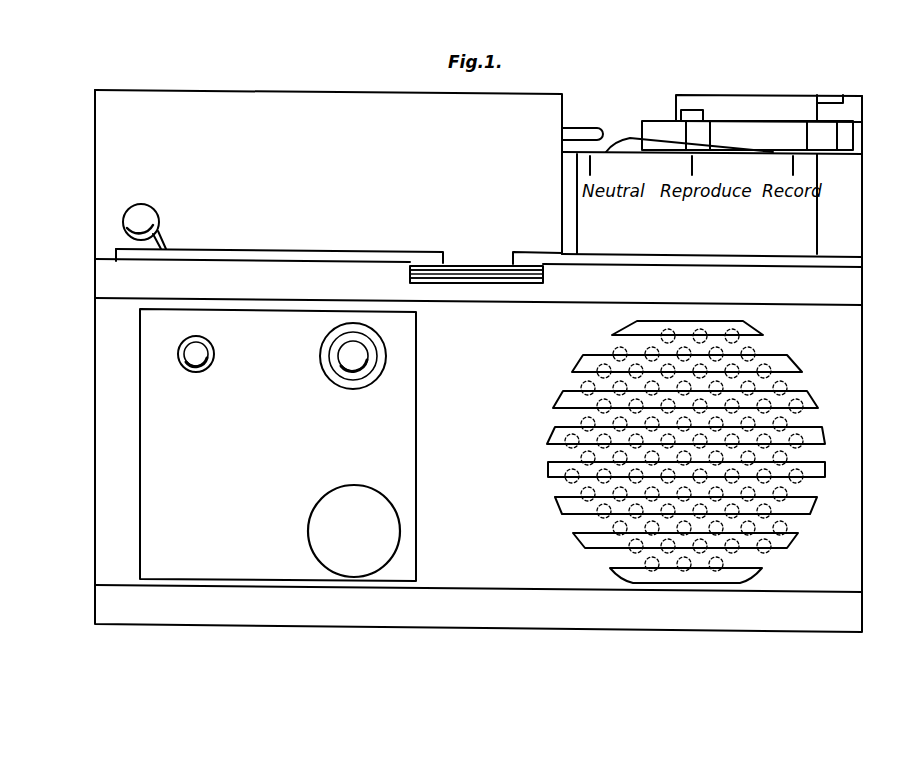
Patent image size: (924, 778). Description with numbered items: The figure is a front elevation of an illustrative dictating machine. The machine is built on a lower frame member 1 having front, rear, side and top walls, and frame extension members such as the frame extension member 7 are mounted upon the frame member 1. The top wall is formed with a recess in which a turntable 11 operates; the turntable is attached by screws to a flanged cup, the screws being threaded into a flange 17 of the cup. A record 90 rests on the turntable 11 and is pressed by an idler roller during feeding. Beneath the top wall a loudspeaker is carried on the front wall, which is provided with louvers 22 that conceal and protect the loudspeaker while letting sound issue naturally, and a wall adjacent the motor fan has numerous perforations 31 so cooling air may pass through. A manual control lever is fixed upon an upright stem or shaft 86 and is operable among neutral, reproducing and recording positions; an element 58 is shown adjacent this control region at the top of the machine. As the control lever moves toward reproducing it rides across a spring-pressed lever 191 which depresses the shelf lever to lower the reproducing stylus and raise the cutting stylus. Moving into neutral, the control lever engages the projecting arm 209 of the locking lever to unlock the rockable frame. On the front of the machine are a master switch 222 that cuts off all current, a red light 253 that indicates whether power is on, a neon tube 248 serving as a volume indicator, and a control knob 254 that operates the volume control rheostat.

The lower frame member 1 is at (88, 338).
The frame extension member 7 is at (860, 358).
The turntable 11 is at (494, 272).
The flange 17 is at (476, 278).
The louvers 22 is at (825, 468).
The perforations 31 is at (790, 357).
The control key bar 58 is at (770, 127).
The upright stem or shaft 86 is at (697, 110).
The record 90 is at (465, 265).
The lever 191 is at (630, 138).
The projecting arm 209 is at (583, 128).
The master switch 222 is at (160, 216).
The neon tube 248 is at (348, 365).
The red light 253 is at (196, 373).
The control knob 254 is at (318, 540).